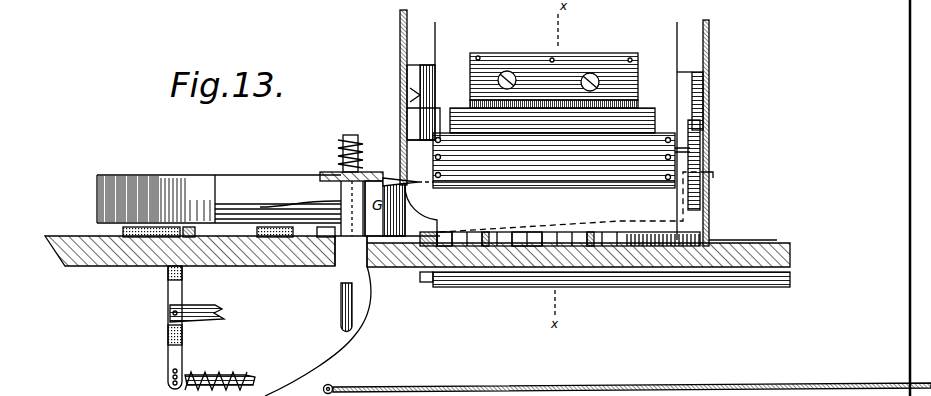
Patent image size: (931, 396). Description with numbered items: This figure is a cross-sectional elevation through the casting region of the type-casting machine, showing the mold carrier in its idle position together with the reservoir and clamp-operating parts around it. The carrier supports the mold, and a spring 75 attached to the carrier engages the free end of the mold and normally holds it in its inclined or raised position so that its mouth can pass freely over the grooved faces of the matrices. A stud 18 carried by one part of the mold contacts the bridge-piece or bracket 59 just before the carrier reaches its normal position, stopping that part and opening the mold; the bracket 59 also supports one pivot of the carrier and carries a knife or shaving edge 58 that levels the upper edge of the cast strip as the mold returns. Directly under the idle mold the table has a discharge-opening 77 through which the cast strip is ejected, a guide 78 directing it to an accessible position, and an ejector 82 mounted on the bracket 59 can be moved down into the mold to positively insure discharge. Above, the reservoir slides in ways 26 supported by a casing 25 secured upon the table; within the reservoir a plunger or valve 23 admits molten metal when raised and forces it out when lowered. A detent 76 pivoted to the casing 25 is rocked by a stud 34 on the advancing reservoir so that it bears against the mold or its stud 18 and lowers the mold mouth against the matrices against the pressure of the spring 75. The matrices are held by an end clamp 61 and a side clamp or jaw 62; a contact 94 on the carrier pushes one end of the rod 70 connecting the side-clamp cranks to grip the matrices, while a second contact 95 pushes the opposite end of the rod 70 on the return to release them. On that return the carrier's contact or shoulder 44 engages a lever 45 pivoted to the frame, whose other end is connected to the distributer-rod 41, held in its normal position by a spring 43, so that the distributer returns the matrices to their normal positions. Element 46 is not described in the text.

The stud 18 is at (366, 180).
The plunger or valve 23 is at (552, 120).
The casing 25 is at (400, 50).
The ways 26 is at (403, 95).
The stud 34 is at (561, 160).
The distributer-rod 41 is at (243, 382).
The spring 43 is at (207, 376).
The contact or shoulder 44 is at (158, 231).
The lever 45 is at (165, 363).
The guide foot 46 is at (195, 232).
The knife or shaving edge 58 is at (405, 183).
The bridge-piece or bracket 59 is at (330, 172).
The end clamp 61 is at (740, 246).
The side clamp or jaw 62 is at (615, 287).
The rod 70 is at (421, 216).
The spring 75 is at (322, 217).
The detent 76 is at (701, 150).
The discharge-opening 77 is at (351, 252).
The guide 78 is at (327, 367).
The ejector 82 is at (350, 146).
The contact 94 is at (282, 238).
The second contact 95 is at (444, 232).